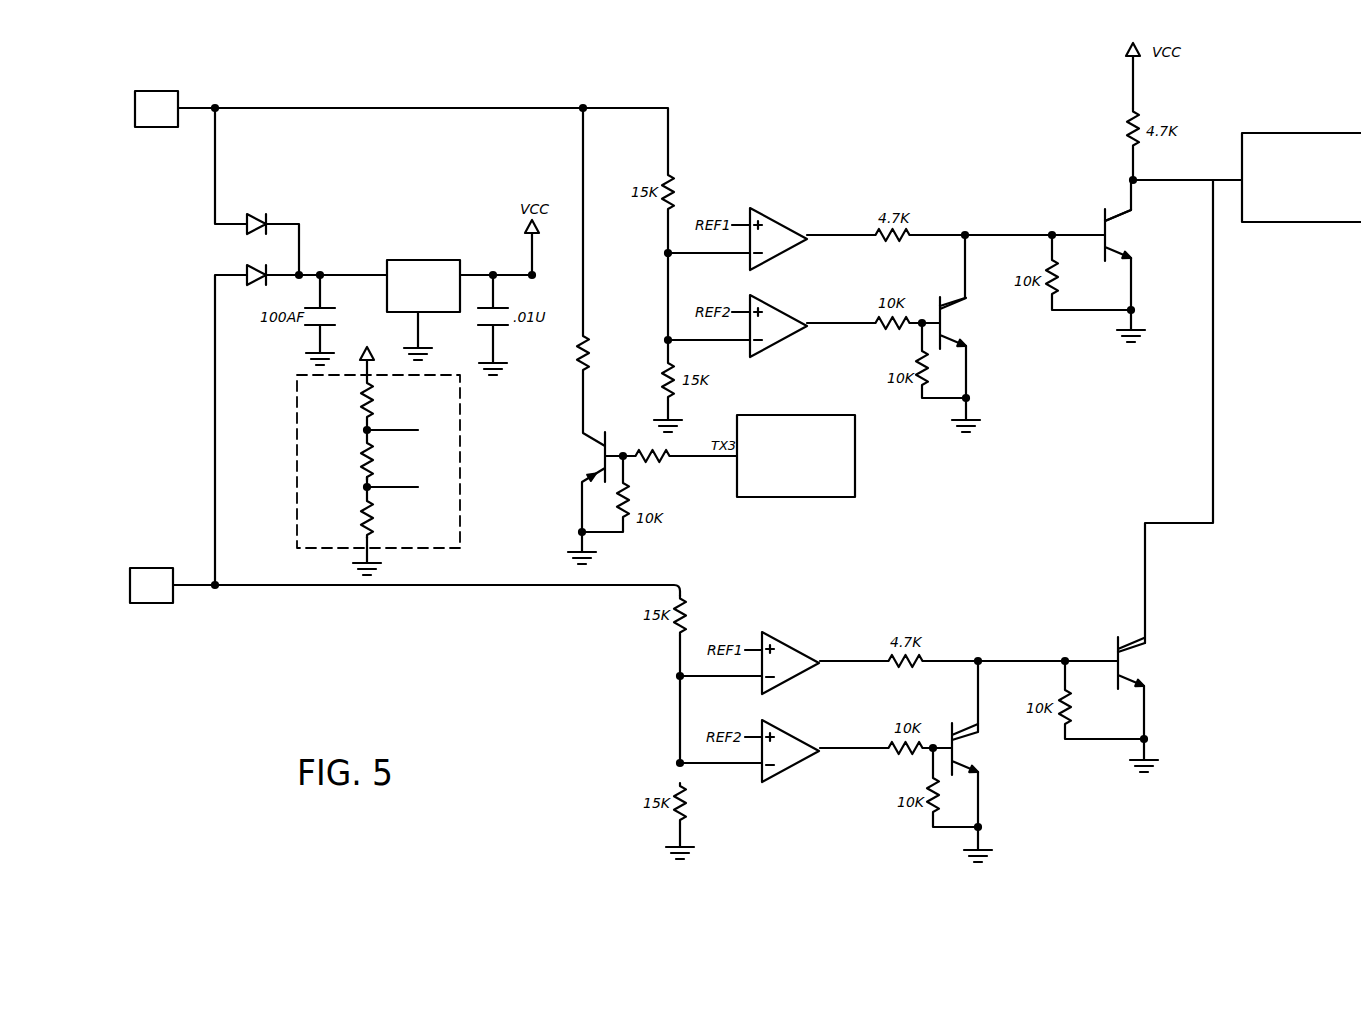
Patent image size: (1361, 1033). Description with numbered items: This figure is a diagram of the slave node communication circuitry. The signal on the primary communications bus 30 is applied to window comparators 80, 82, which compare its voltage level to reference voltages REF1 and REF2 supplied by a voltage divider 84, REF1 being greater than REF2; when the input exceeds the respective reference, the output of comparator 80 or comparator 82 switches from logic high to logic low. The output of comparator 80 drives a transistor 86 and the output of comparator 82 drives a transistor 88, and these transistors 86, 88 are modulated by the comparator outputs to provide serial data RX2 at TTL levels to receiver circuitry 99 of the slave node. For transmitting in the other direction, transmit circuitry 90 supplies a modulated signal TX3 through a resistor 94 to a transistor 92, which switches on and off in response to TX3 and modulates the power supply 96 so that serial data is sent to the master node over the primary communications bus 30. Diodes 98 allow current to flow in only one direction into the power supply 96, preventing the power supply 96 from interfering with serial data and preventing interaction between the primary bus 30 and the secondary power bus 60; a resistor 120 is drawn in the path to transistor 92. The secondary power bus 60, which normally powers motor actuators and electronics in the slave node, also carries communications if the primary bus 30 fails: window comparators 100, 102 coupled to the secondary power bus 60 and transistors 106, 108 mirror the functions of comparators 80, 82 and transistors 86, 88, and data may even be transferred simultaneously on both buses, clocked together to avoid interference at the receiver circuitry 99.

The primary communications bus 30 is at (180, 97).
The secondary power bus 60 is at (176, 600).
The window comparator 80 is at (775, 221).
The window comparator 82 is at (779, 309).
The voltage divider 84 is at (475, 470).
The transistor 86 is at (1120, 213).
The transistor 88 is at (960, 298).
The transmit circuitry 90 is at (793, 497).
The transistor 92 is at (605, 445).
The resistor 94 is at (680, 463).
The power supply 96 is at (425, 260).
The diodes 98 is at (288, 208).
The receiver circuitry 99 is at (1303, 222).
The window comparator 100 is at (792, 646).
The window comparator 102 is at (792, 732).
The transistor 106 is at (1133, 643).
The transistor 108 is at (971, 738).
The resistor 120 is at (599, 353).